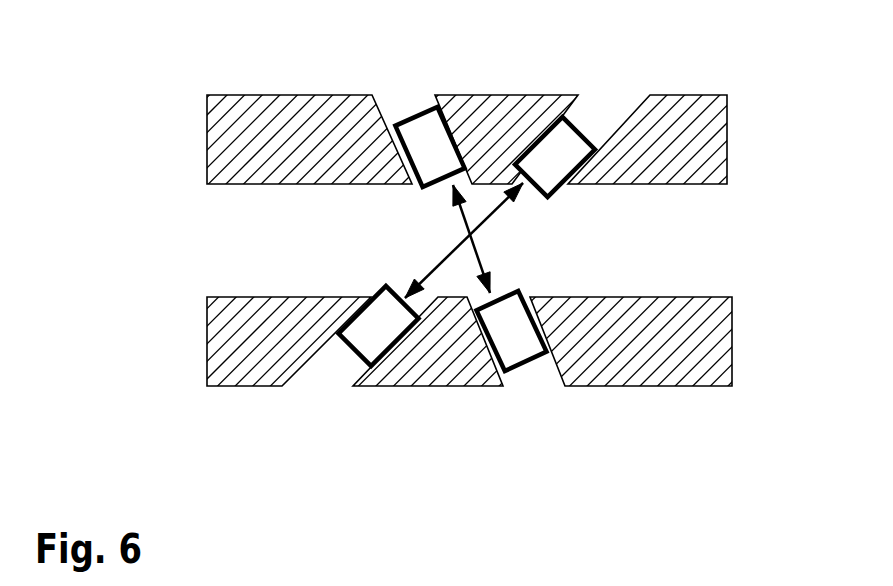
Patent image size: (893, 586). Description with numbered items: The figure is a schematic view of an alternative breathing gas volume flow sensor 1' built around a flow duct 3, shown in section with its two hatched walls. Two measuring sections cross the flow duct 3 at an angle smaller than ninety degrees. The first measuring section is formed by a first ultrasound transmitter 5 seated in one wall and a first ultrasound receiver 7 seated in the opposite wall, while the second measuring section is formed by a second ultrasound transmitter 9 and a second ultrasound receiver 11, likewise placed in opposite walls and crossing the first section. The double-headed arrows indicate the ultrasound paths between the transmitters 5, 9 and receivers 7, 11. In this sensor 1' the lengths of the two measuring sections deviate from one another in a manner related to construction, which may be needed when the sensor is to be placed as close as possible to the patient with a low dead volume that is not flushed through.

The breathing gas volume flow sensor 1' is at (446, 231).
The flow duct 3 is at (630, 255).
The first ultrasound transmitter 5 is at (397, 70).
The first ultrasound receiver 7 is at (563, 453).
The second ultrasound transmitter 9 is at (643, 72).
The second ultrasound receiver 11 is at (242, 457).